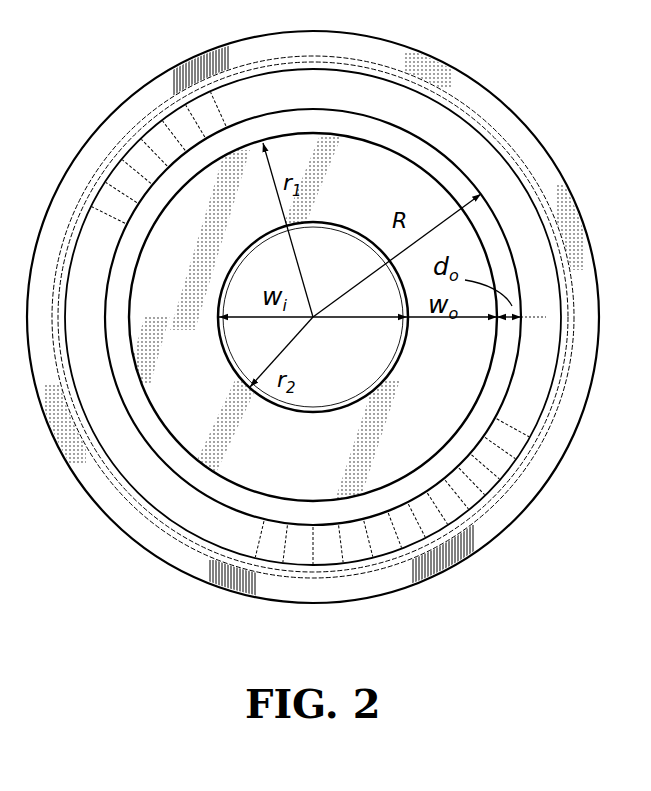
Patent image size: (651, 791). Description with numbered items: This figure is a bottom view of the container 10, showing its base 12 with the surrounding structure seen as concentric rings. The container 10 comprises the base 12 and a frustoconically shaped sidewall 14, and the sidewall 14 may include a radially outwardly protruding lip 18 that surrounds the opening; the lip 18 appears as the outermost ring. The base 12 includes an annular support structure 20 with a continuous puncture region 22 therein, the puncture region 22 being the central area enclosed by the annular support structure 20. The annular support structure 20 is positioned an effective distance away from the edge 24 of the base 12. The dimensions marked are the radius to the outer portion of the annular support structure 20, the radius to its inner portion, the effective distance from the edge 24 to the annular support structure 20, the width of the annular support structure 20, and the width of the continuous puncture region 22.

The container 10 is at (196, 630).
The base 12 is at (483, 453).
The frustoconically shaped sidewall 14 is at (538, 283).
The radially outwardly protruding lip 18 is at (561, 172).
The annular support structure 20 is at (455, 363).
The continuous puncture region 22 is at (350, 381).
The edge 24 is at (353, 527).